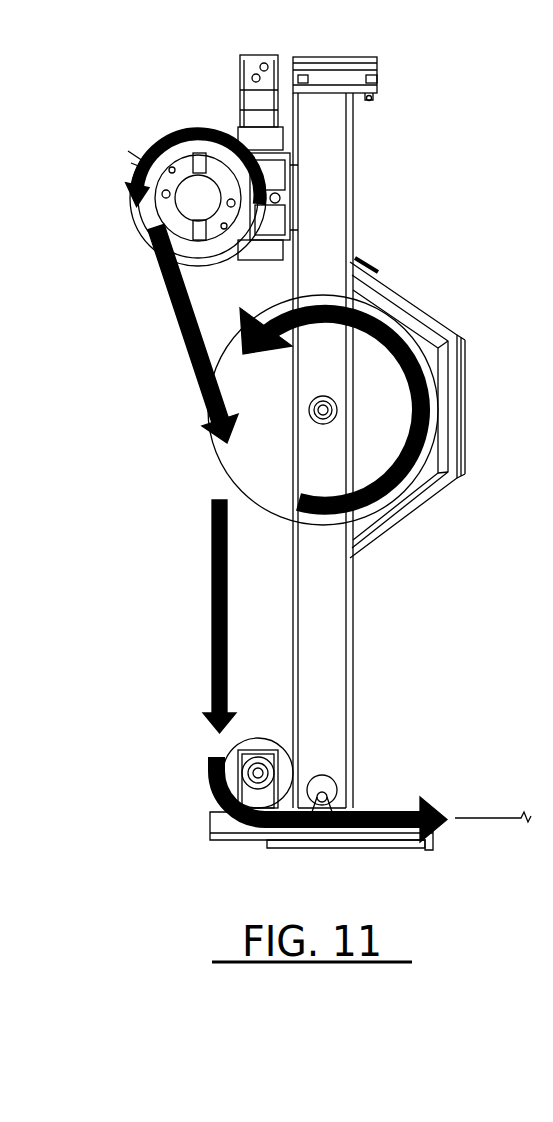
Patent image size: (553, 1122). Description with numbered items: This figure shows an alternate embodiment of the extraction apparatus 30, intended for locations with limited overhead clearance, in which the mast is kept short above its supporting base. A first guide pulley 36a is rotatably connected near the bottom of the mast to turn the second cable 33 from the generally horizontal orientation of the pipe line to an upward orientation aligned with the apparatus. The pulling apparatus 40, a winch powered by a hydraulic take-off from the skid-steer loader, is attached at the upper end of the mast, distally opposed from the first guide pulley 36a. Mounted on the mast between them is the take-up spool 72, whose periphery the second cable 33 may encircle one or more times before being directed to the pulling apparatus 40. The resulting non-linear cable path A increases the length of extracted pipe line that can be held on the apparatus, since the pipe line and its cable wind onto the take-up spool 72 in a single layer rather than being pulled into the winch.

The extraction apparatus 30 is at (401, 236).
The pulling apparatus 40 is at (141, 235).
The take-up spool 72 is at (215, 463).
The cable path A is at (208, 618).
The first guide pulley 36a is at (225, 745).
The second cable 33 is at (482, 807).